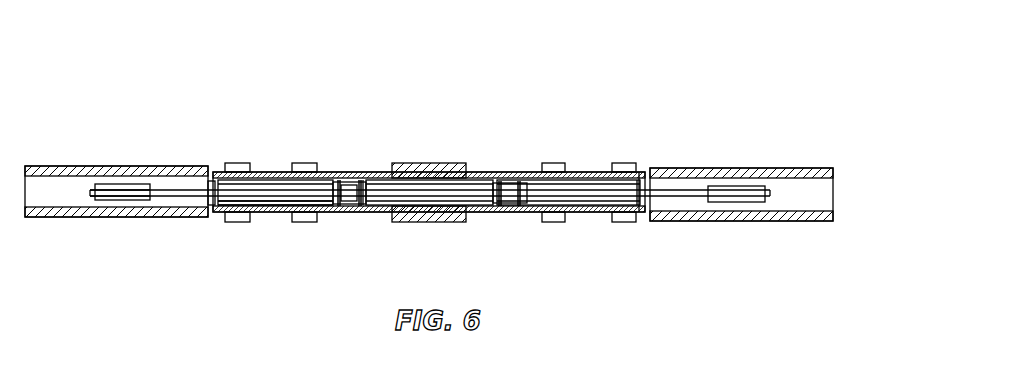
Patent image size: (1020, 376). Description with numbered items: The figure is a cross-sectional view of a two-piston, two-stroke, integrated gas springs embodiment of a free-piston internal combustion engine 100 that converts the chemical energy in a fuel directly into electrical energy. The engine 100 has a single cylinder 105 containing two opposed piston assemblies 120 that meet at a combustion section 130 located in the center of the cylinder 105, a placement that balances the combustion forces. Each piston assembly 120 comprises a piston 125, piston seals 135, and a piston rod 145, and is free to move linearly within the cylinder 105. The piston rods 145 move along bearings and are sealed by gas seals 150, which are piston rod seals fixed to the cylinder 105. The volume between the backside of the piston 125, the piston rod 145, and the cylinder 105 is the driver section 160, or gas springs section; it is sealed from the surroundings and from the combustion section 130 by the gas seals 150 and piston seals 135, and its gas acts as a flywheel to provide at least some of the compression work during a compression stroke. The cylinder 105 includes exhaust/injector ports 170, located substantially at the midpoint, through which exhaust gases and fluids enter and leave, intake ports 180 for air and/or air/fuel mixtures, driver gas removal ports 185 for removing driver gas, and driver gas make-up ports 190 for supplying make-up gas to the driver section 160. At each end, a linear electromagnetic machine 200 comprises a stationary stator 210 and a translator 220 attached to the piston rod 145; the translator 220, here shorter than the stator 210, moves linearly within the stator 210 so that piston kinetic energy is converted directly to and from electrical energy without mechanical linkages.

The internal combustion engine 100 is at (727, 52).
The cylinder 105 is at (484, 170).
The piston assembly 120 is at (365, 113).
The piston 125 is at (344, 203).
The combustion section 130 is at (416, 201).
The piston seals 135 is at (357, 182).
The piston rod 145 is at (285, 181).
The gas seals 150 is at (211, 213).
The driver section 160 is at (284, 206).
The exhaust/injector ports 170 is at (432, 166).
The intake ports 180 is at (555, 165).
The driver gas removal ports 185 is at (626, 165).
The driver gas make-up ports 190 is at (622, 223).
The linear electromagnetic machine 200 is at (207, 114).
The stator 210 is at (92, 183).
The translator 220 is at (145, 189).